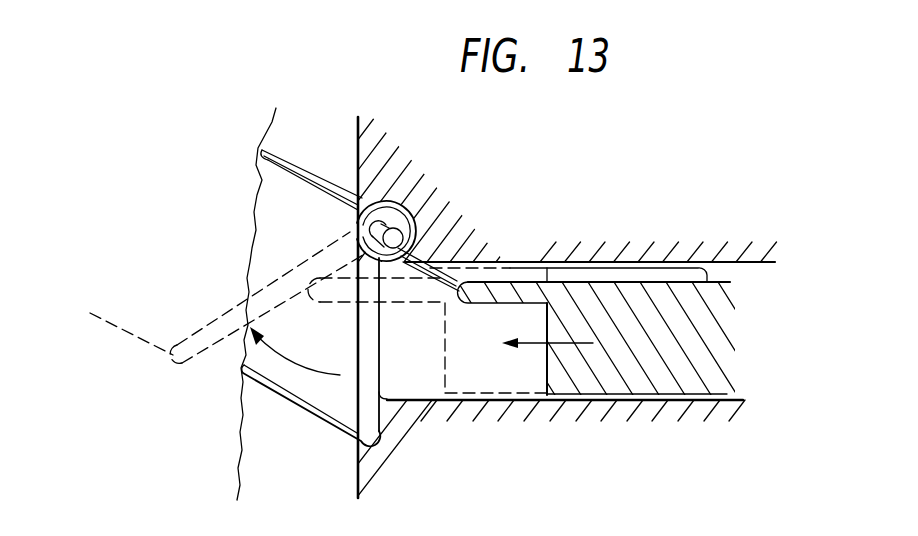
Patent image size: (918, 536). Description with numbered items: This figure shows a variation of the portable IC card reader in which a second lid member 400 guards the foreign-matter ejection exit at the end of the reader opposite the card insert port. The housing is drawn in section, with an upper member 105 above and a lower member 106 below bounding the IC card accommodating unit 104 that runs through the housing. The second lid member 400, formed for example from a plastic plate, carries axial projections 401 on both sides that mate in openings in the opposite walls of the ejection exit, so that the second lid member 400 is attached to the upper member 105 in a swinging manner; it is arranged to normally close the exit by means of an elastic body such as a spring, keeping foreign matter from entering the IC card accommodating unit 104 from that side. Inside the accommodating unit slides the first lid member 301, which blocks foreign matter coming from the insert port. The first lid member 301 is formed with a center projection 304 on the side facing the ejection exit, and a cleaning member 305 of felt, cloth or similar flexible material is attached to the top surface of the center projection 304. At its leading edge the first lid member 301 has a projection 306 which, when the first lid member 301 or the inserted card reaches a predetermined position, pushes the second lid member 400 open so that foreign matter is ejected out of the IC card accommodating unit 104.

The second lid member 400 is at (266, 231).
The axial projection 401 is at (399, 237).
The upper member 105 is at (597, 244).
The cleaning member 305 is at (683, 278).
The center projection 304 is at (662, 367).
The projection 306 is at (481, 292).
The IC card accommodating unit 104 is at (490, 322).
The first lid member 301 is at (614, 394).
The lower member 106 is at (497, 410).